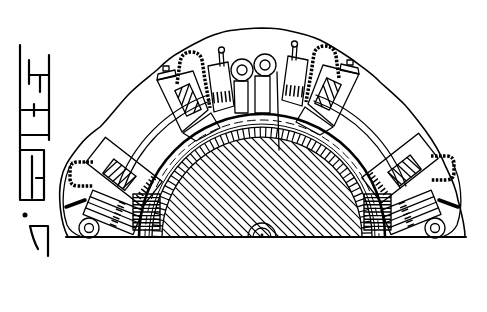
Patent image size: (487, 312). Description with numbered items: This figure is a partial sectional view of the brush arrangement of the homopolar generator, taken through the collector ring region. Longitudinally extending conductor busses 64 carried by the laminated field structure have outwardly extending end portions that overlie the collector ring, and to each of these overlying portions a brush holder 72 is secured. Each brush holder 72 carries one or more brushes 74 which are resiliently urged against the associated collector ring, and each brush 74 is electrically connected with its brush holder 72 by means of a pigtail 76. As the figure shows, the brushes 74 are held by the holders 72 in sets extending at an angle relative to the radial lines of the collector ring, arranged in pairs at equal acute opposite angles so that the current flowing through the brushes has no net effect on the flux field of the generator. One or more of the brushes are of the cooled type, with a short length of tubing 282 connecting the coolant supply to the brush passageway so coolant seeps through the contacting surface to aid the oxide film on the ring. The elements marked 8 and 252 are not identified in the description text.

The rotor core 8 is at (223, 220).
The rotor winding band 252 is at (164, 218).
The conductor buss 64 is at (162, 112).
The brush holder 72 is at (111, 226).
The brush 74 is at (131, 224).
The pigtail 76 is at (160, 62).
The tubing 282 is at (203, 58).